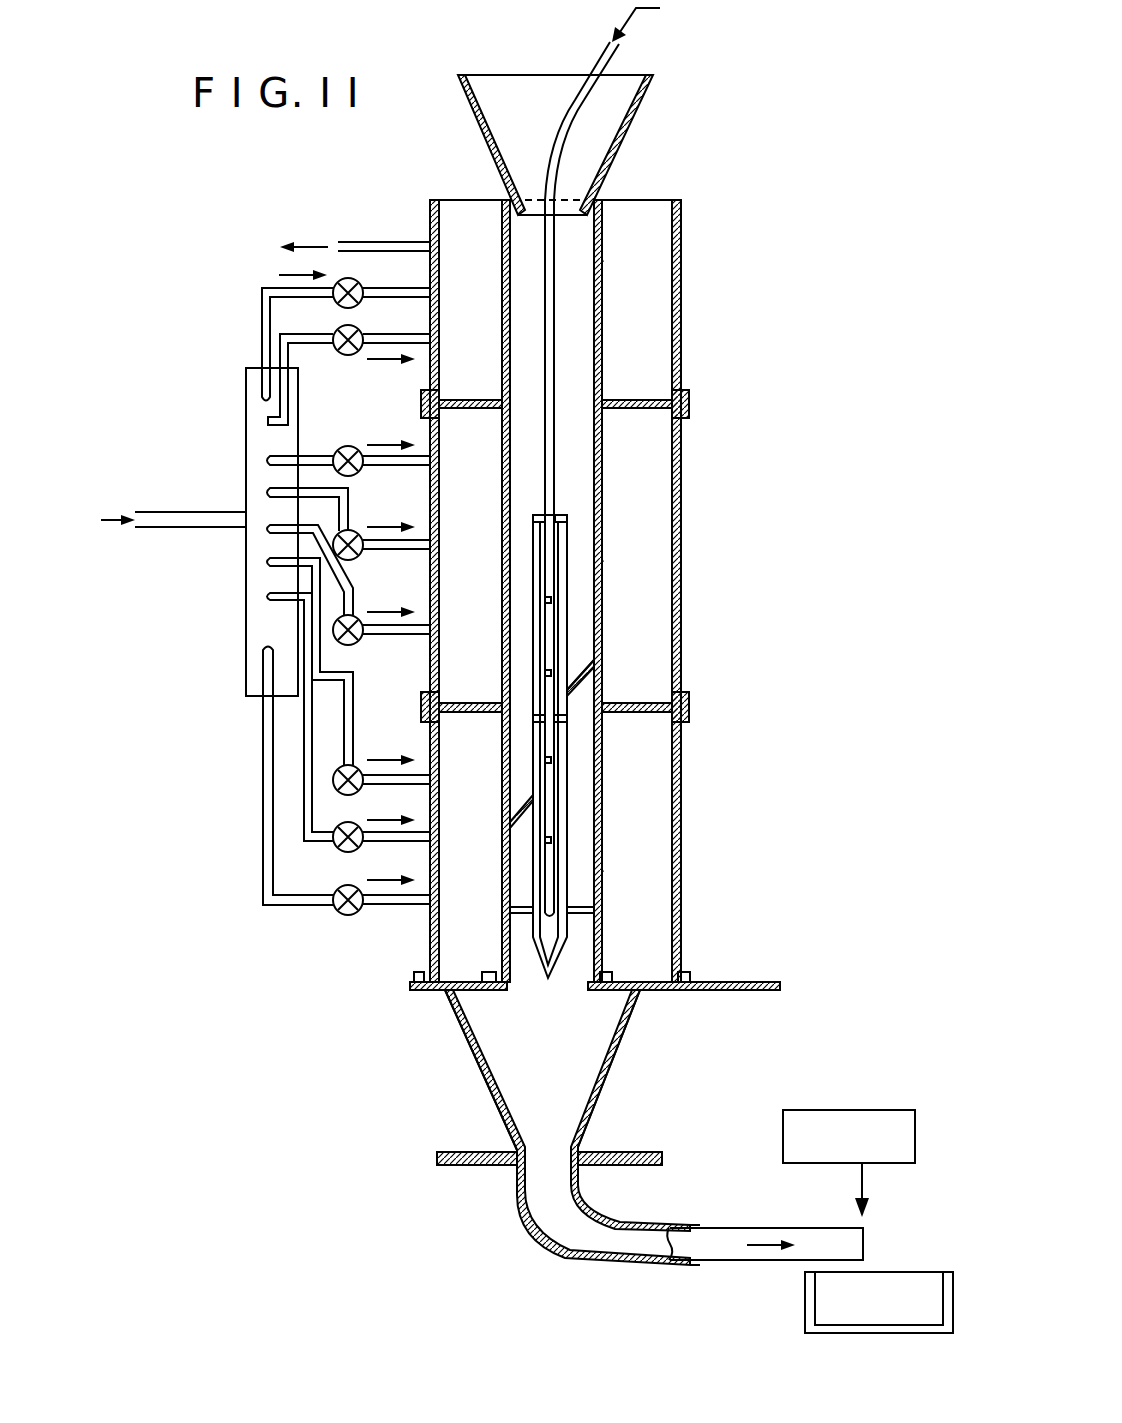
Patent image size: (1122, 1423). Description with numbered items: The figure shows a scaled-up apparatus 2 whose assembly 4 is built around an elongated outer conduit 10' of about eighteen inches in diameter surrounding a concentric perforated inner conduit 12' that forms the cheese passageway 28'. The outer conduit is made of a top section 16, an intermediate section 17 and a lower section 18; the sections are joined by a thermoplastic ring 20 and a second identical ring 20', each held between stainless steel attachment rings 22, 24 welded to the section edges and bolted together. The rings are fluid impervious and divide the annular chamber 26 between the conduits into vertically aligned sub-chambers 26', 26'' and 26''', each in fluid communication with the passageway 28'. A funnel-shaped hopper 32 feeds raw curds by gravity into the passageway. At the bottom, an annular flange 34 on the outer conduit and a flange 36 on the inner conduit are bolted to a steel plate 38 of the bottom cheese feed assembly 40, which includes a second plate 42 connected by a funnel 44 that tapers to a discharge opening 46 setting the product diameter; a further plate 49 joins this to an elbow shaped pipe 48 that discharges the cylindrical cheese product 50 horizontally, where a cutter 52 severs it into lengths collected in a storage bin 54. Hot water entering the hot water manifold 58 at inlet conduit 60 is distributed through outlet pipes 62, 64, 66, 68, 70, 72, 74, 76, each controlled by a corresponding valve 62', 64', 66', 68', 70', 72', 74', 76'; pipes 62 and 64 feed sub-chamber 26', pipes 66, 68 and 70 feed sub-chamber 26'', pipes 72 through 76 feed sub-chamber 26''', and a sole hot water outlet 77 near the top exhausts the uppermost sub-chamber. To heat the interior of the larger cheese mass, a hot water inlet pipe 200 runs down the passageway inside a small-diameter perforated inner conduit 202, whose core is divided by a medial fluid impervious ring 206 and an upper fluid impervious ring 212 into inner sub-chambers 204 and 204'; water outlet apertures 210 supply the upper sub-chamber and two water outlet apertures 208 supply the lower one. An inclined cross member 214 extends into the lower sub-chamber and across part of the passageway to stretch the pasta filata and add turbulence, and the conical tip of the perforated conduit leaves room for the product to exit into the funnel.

The apparatus 2 is at (775, 216).
The assembly 4 is at (752, 365).
The outer conduit 10' is at (699, 551).
The perforated inner conduit 12' is at (659, 675).
The top conduit section 16 is at (681, 326).
The intermediate conduit section 17 is at (679, 483).
The lower conduit section 18 is at (681, 806).
The thermoplastic ring 20 is at (555, 381).
The thermoplastic ring 20' is at (555, 733).
The metal attachment ring 22 is at (686, 393).
The metal attachment ring 24 is at (687, 421).
The chamber 26 is at (645, 175).
The upper sub-chamber 26' is at (671, 238).
The middle sub-chamber 26'' is at (682, 550).
The lowermost sub-chamber 26''' is at (681, 859).
The passageway 28' is at (654, 310).
The hopper 32 is at (641, 140).
The annular flange 34 is at (690, 966).
The flange 36 is at (650, 949).
The steel plate 38 is at (790, 986).
The bottom cheese feed assembly 40 is at (440, 1075).
The second plate 42 is at (656, 1152).
The funnel 44 is at (496, 1096).
The discharge opening 46 is at (548, 1160).
The elbow shaped pipe 48 is at (516, 1221).
The further plate 49 is at (455, 1165).
The cylindrical cheese product 50 is at (756, 1228).
The cutter 52 is at (866, 1110).
The storage bin 54 is at (805, 1308).
The hot water manifold 58 is at (245, 640).
The inlet conduit 60 is at (172, 532).
The outlet pipe 62 is at (260, 344).
The valve 62' is at (309, 289).
The outlet pipe 64 is at (259, 380).
The valve 64' is at (381, 332).
The outlet pipe 66 is at (300, 431).
The valve 66' is at (381, 433).
The outlet pipe 68 is at (271, 506).
The valve 68' is at (381, 522).
The outlet pipe 70 is at (275, 570).
The valve 70' is at (381, 611).
The outlet pipe 72 is at (276, 661).
The valve 72' is at (381, 758).
The outlet pipe 74 is at (263, 717).
The valve 74' is at (355, 853).
The outlet pipe 76 is at (269, 776).
The valve 76' is at (370, 915).
The hot water outlet 77 is at (372, 242).
The hot water inlet pipe 200 is at (612, 60).
The perforated inner conduit 202 is at (575, 637).
The inner sub-chamber 204 is at (603, 586).
The inner sub-chamber 204' is at (580, 869).
The fluid impervious ring 206 is at (533, 706).
The water outlet apertures 208 is at (544, 762).
The water outlet apertures 210 is at (551, 600).
The upper fluid impervious ring 212 is at (533, 517).
The inclined cross member 214 is at (520, 816).